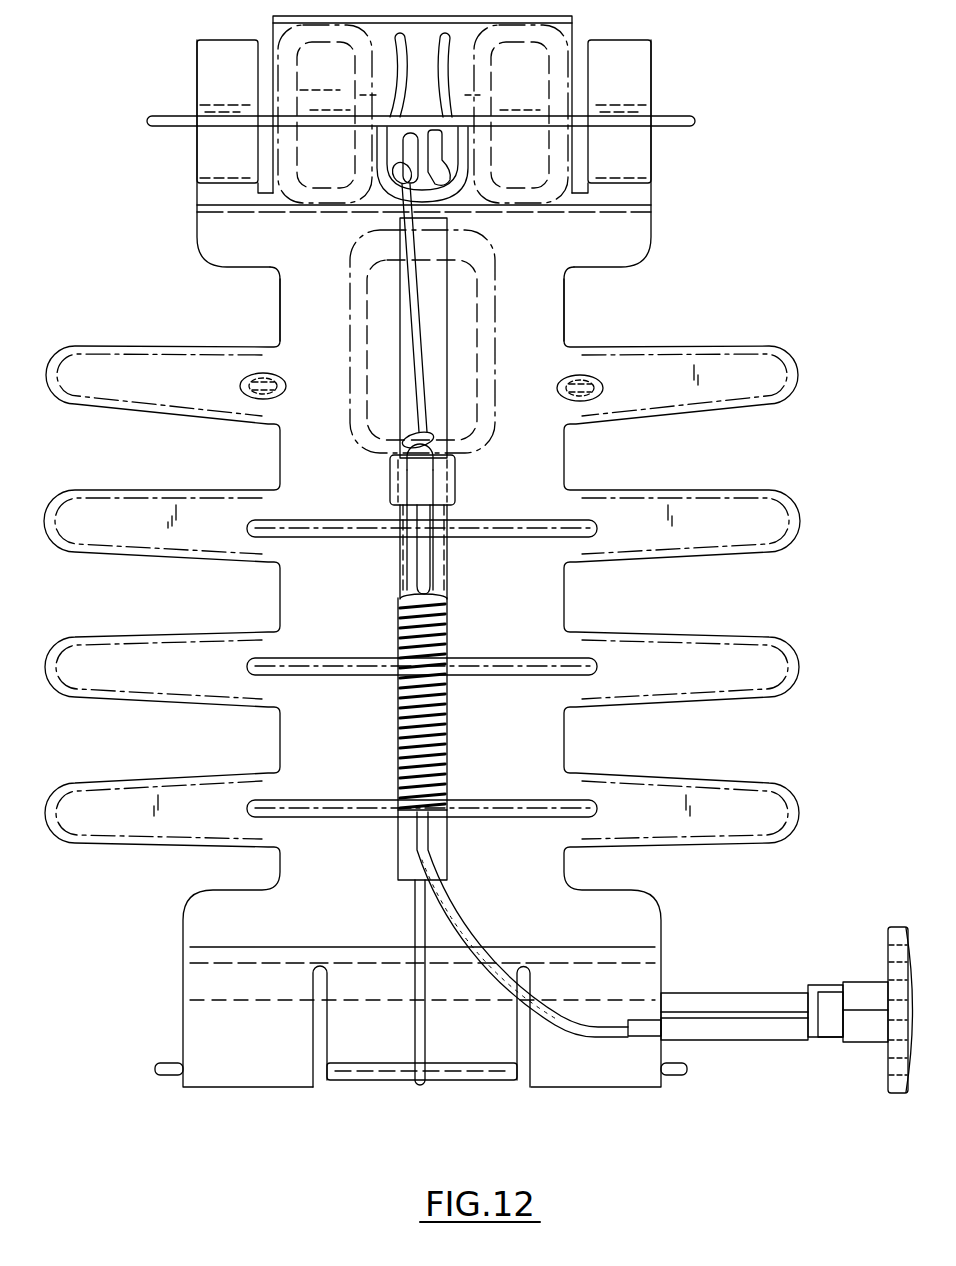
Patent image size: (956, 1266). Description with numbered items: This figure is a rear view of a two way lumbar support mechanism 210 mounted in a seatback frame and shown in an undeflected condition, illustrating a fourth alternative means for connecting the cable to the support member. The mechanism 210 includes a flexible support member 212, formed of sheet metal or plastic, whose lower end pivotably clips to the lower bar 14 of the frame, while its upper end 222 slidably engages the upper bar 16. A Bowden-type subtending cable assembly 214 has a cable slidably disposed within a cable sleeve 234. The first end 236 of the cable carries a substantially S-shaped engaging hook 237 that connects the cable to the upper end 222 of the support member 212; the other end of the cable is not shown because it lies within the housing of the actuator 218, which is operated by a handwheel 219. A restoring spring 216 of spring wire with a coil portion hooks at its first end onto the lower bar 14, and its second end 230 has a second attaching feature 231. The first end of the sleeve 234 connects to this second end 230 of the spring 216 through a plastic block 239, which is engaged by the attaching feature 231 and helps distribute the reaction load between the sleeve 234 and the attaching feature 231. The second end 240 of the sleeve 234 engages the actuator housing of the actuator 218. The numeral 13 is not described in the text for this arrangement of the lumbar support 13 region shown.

The heat sink fins 13 is at (686, 450).
The lower bar 14 is at (170, 1063).
The upper bar 16 is at (175, 115).
The lumbar support mechanism 210 is at (121, 250).
The flexible support member 212 is at (278, 283).
The subtending cable assembly 214 is at (410, 835).
The restoring spring 216 is at (448, 712).
The actuator 218 is at (750, 990).
The handwheel 219 is at (887, 935).
The upper end 222 is at (660, 195).
The second end 230 is at (395, 457).
The second attaching feature 231 is at (408, 434).
The cable sleeve 234 is at (428, 572).
The first end 236 is at (398, 182).
The engaging hook 237 is at (440, 147).
The plastic block 239 is at (392, 483).
The second end 240 is at (605, 1040).